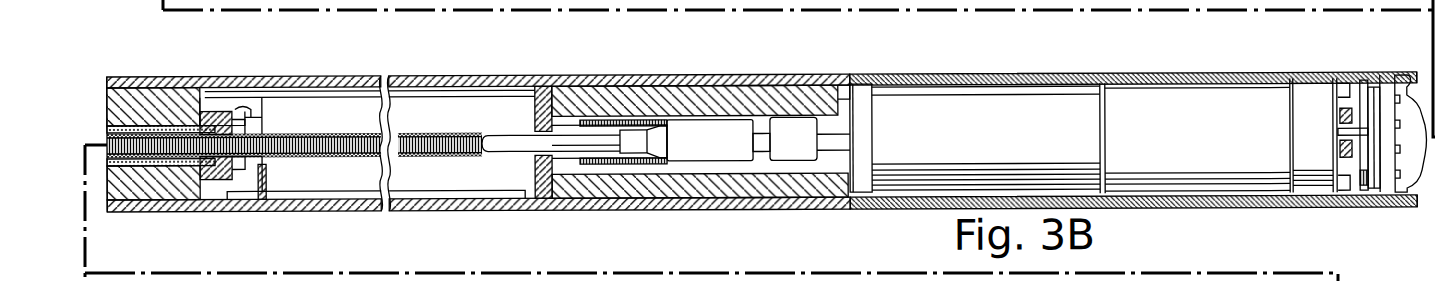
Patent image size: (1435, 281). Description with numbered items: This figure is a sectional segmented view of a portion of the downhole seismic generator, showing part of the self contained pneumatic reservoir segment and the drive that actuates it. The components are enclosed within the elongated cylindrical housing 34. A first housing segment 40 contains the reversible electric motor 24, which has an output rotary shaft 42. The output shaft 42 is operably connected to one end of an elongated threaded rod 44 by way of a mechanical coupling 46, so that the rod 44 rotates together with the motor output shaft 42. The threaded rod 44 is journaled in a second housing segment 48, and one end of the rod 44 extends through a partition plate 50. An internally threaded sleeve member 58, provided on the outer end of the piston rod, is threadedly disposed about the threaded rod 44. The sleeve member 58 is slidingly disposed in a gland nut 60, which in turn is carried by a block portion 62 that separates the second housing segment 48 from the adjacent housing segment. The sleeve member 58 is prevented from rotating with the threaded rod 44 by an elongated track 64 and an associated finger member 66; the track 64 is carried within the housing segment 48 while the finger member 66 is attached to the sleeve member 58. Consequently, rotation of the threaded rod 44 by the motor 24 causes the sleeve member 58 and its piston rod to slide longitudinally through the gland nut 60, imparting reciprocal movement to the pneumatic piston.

The reversible electric motor 24 is at (1002, 150).
The elongated cylindrical housing 34 is at (1153, 76).
The first housing segment 40 is at (742, 200).
The output rotary shaft 42 is at (832, 139).
The elongated threaded rod 44 is at (518, 137).
The mechanical coupling 46 is at (705, 131).
The second housing segment 48 is at (437, 212).
The partition plate 50 is at (551, 208).
The internally threaded sleeve member 58 is at (255, 104).
The gland nut 60 is at (228, 108).
The block portion 62 is at (160, 212).
The elongated track 64 is at (312, 184).
The finger member 66 is at (270, 182).